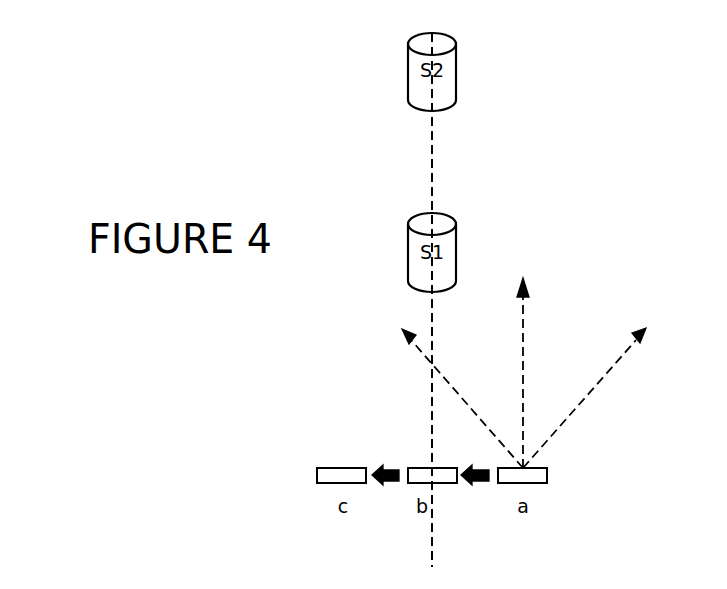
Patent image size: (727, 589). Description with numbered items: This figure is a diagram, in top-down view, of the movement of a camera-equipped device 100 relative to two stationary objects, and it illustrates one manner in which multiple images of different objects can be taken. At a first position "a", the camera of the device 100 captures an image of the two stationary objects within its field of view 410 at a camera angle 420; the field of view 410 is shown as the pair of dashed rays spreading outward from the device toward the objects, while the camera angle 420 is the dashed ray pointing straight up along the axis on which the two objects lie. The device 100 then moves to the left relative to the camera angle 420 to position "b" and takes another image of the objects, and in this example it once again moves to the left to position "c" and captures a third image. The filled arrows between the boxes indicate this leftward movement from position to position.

The device 100 is at (548, 476).
The field of view 410 is at (407, 343).
The camera angle 420 is at (525, 326).